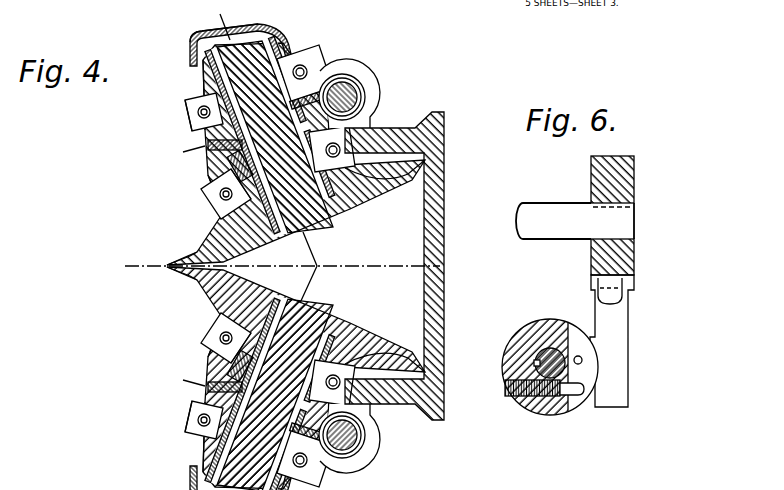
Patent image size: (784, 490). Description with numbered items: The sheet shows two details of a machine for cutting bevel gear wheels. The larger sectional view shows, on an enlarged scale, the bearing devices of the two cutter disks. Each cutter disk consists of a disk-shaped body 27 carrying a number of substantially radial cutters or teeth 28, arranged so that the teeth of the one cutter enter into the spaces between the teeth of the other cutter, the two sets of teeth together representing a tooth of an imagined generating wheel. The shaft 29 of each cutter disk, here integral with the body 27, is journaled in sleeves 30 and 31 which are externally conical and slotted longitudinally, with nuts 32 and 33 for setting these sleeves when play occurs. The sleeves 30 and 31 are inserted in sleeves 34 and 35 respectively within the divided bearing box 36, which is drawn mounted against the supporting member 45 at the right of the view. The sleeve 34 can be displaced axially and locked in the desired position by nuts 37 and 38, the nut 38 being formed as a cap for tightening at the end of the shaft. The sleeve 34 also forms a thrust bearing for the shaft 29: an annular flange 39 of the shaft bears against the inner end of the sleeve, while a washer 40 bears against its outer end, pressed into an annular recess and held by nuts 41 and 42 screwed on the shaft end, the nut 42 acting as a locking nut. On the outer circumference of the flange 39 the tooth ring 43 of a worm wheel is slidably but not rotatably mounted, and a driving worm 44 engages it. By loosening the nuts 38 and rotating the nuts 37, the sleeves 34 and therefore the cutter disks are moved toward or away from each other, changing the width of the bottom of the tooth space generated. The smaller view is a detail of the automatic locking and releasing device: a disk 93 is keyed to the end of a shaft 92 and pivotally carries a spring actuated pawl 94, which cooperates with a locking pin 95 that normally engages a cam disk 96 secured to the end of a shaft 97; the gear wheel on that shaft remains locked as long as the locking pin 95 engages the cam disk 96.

In FIG. 4, the disk-shaped body 27 is at (392, 198).
In FIG. 4, the cutters or teeth 28 is at (185, 259).
In FIG. 4, the shaft 29 is at (233, 93).
In FIG. 4, the sleeve 30 is at (228, 133).
In FIG. 4, the sleeve 31 is at (215, 215).
In FIG. 4, the nut 32 is at (220, 120).
In FIG. 4, the nut 33 is at (225, 183).
In FIG. 4, the sleeve 34 is at (152, 421).
In FIG. 4, the sleeve 35 is at (222, 196).
In FIG. 4, the divided bearing box 36 is at (325, 62).
In FIG. 4, the nut 37 is at (183, 152).
In FIG. 4, the nut 38 is at (196, 72).
In FIG. 4, the annular flange 39 is at (207, 157).
In FIG. 4, the washer 40 is at (274, 57).
In FIG. 4, the nut 41 is at (207, 88).
In FIG. 4, the nut 42 is at (193, 54).
In FIG. 4, the tooth ring 43 is at (225, 170).
In FIG. 4, the driving worm 44 is at (366, 90).
In FIG. 4, the frame 45 is at (435, 402).
In FIG. 6, the shaft 92 is at (540, 360).
In FIG. 6, the disk 93 is at (505, 372).
In FIG. 6, the spring actuated pawl 94 is at (573, 338).
In FIG. 6, the locking pin 95 is at (617, 352).
In FIG. 6, the cam disk 96 is at (635, 268).
In FIG. 6, the shaft 97 is at (547, 215).